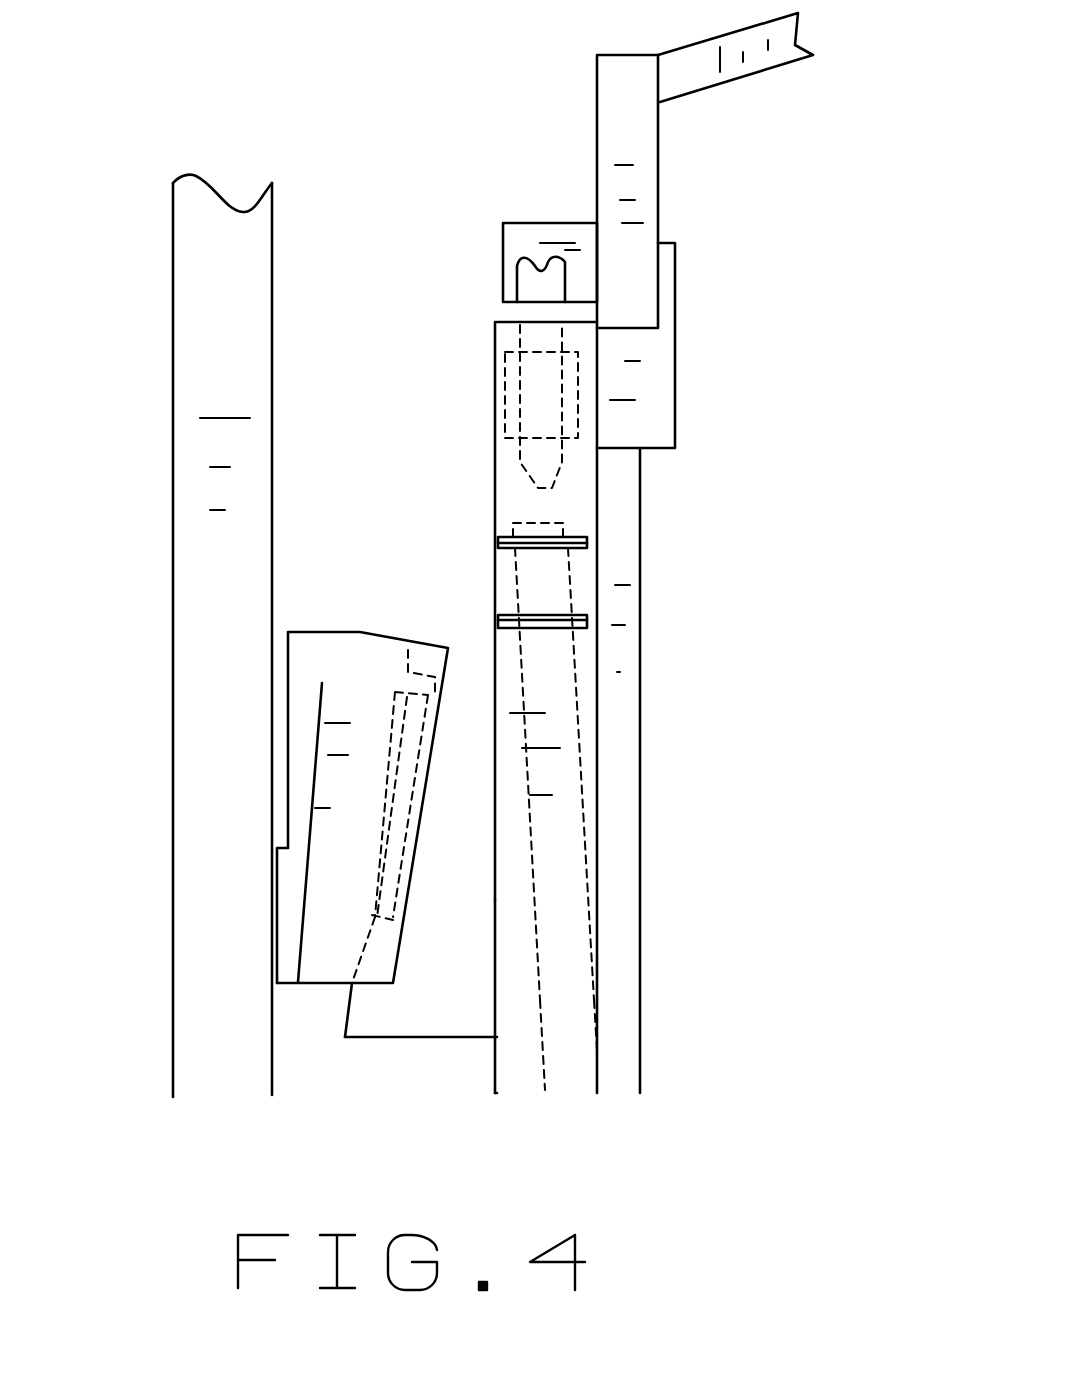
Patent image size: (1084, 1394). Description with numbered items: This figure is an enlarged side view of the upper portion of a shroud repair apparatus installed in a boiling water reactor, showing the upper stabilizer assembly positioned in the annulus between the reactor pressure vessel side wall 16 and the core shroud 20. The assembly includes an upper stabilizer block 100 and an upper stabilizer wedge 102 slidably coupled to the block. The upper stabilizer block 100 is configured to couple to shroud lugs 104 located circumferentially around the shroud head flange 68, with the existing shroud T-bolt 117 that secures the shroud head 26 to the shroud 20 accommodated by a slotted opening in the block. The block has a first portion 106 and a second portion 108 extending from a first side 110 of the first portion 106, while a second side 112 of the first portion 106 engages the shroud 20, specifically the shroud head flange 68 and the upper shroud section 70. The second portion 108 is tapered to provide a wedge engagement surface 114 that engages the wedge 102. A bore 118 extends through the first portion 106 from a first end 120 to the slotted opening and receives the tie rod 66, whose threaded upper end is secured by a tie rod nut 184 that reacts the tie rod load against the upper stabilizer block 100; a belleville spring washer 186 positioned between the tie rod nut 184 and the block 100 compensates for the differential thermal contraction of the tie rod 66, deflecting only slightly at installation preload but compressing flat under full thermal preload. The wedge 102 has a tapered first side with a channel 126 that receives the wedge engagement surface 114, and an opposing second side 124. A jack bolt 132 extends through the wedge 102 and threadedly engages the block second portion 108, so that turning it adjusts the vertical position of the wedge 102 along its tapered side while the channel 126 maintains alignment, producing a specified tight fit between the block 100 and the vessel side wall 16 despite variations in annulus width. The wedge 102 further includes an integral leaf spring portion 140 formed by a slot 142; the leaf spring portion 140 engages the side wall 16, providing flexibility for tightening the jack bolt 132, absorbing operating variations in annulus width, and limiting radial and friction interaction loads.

The side wall 16 is at (172, 573).
The core shroud 20 is at (642, 760).
The shroud head 26 is at (660, 186).
The tie rod 66 is at (568, 1045).
The shroud head flange 68 is at (653, 428).
The upper shroud section 70 is at (618, 860).
The upper stabilizer block 100 is at (480, 1046).
The upper stabilizer wedge 102 is at (327, 632).
The shroud lugs 104 is at (572, 390).
The first portion 106 is at (495, 473).
The second portion 108 is at (400, 1012).
The first side 110 is at (497, 763).
The second side 112 is at (598, 720).
The wedge engagement surface 114 is at (342, 1013).
The shroud T-bolt 117 is at (548, 452).
The bore 118 is at (590, 930).
The first end 120 is at (407, 905).
The second side 124 is at (282, 934).
The channel 126 is at (375, 950).
The jack bolt 132 is at (425, 660).
The leaf spring portion 140 is at (295, 875).
The slot 142 is at (312, 845).
The tie rod nut 184 is at (583, 567).
The belleville spring washer 186 is at (592, 625).